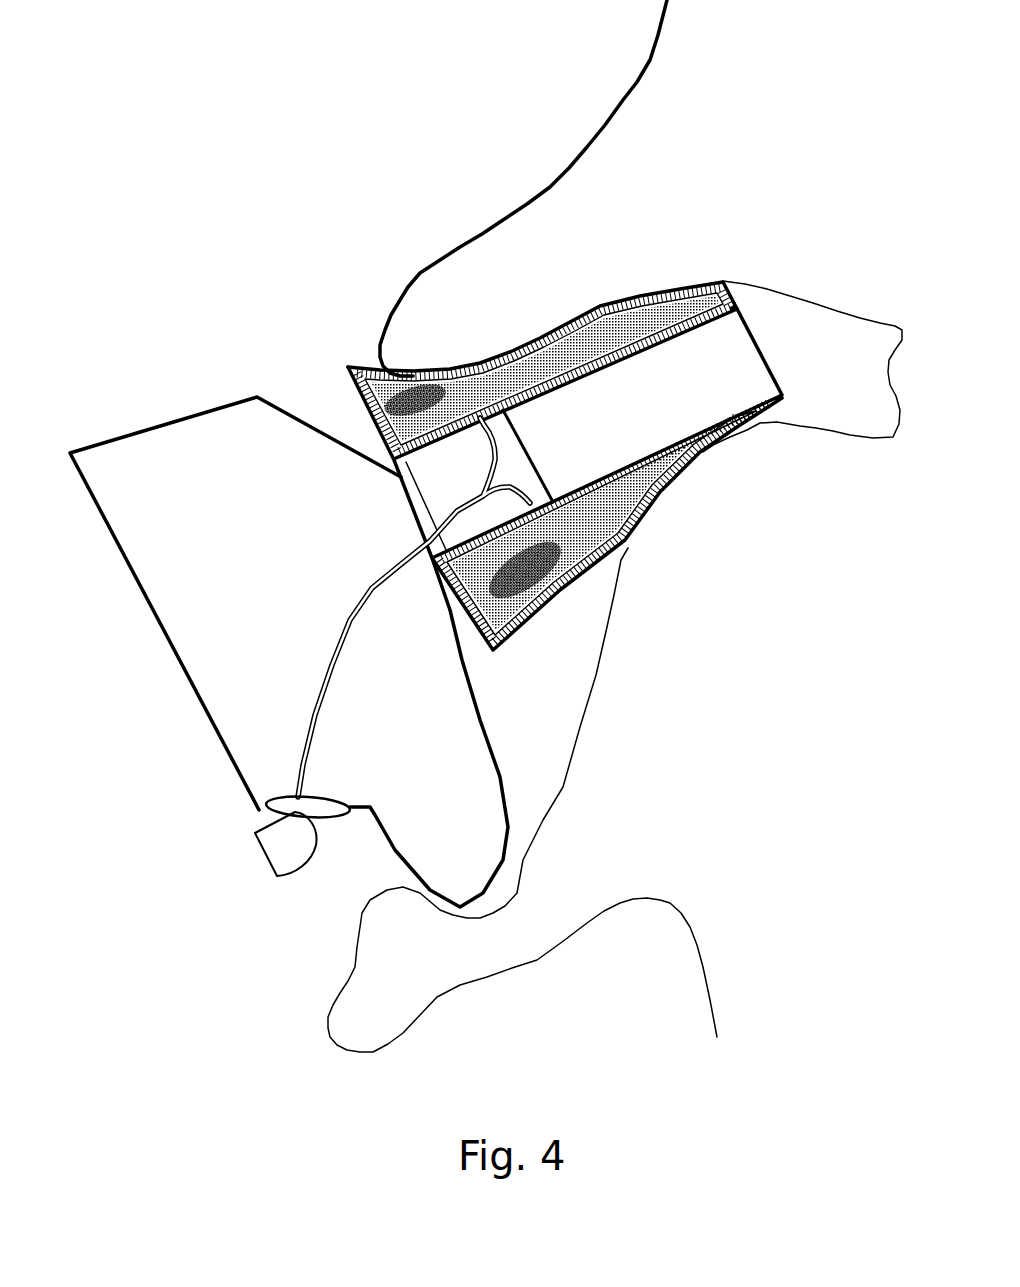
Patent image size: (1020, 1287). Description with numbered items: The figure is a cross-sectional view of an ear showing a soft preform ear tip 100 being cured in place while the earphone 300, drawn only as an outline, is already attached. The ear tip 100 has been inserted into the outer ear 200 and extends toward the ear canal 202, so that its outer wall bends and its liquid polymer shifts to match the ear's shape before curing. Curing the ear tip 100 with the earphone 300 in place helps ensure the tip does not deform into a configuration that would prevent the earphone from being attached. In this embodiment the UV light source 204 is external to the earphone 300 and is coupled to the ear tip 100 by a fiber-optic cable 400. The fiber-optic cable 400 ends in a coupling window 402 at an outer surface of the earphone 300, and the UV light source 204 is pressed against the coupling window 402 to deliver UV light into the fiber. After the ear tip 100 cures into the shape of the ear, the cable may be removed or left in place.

The ear tip 100 is at (367, 416).
The outer ear 200 is at (580, 729).
The ear canal 202 is at (822, 367).
The UV light source 204 is at (272, 863).
The earphone 300 is at (167, 420).
The fiber-optic cable 400 is at (347, 610).
The coupling window 402 is at (328, 798).